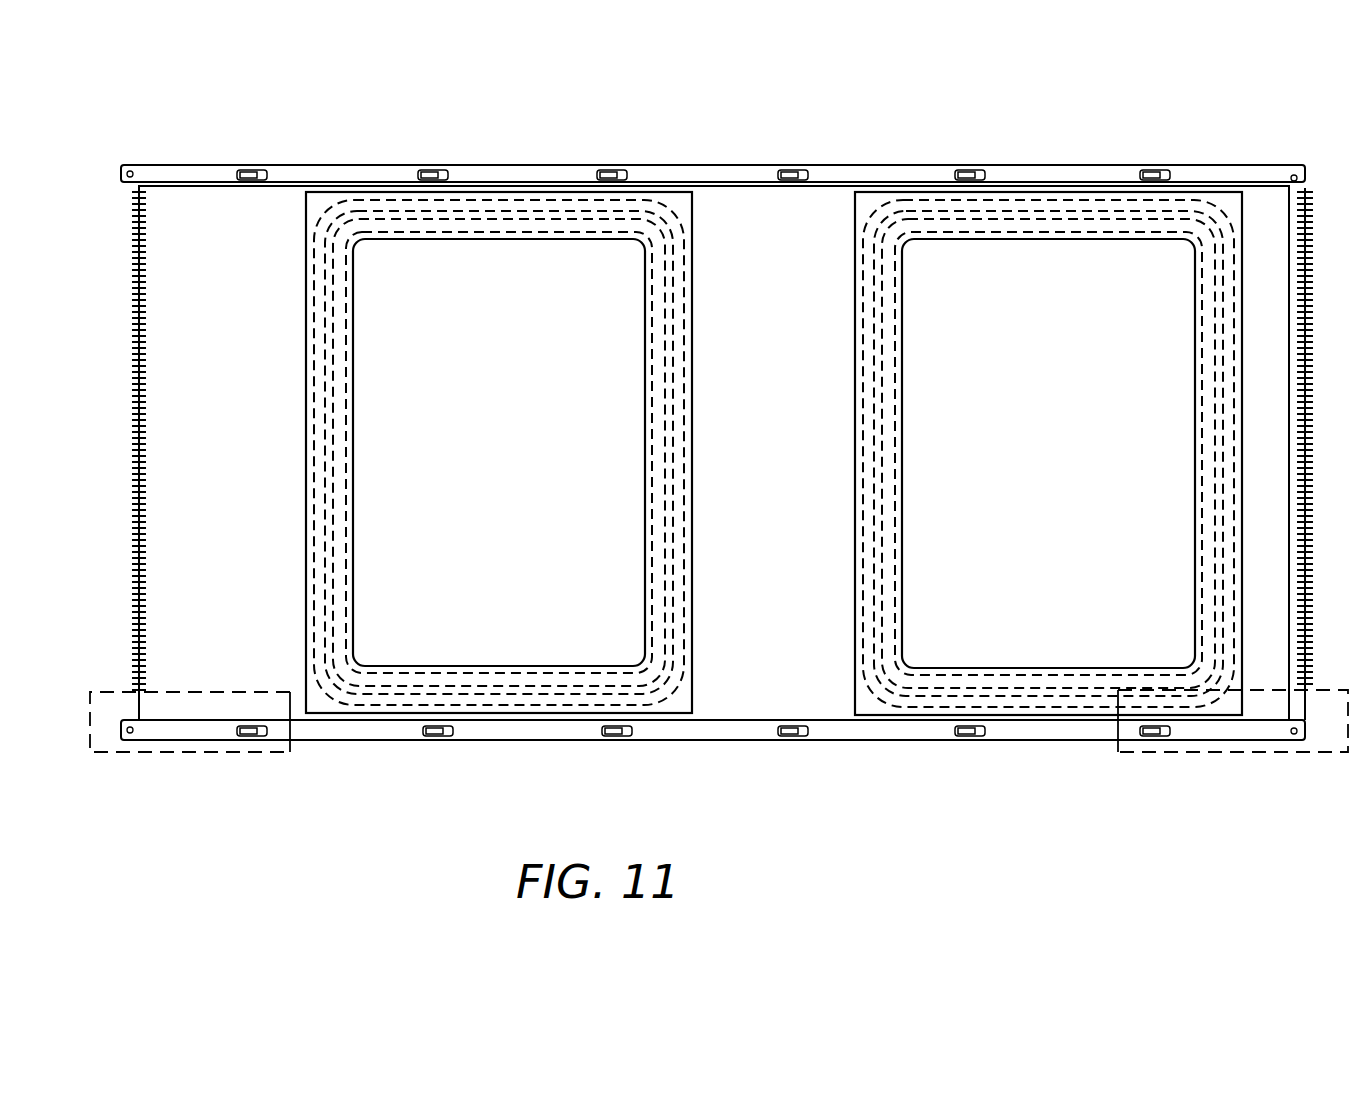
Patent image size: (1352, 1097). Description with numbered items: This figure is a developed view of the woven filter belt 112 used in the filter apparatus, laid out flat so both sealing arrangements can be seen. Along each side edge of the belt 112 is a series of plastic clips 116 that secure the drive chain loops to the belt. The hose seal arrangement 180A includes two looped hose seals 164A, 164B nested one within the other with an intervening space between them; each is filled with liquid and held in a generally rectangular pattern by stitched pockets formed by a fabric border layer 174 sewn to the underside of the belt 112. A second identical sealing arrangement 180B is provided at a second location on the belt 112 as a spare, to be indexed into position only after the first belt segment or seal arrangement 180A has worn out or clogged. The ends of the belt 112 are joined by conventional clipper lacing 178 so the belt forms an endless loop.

The woven filter belt 112 is at (246, 389).
The plastic clips 116 is at (243, 170).
The looped hose seal 164A is at (655, 510).
The looped hose seal 164B is at (680, 450).
The fabric border layer 174 is at (313, 713).
The clipper lacing 178 is at (138, 472).
The hose seal arrangement 180A is at (346, 188).
The second sealing arrangement 180B is at (846, 190).